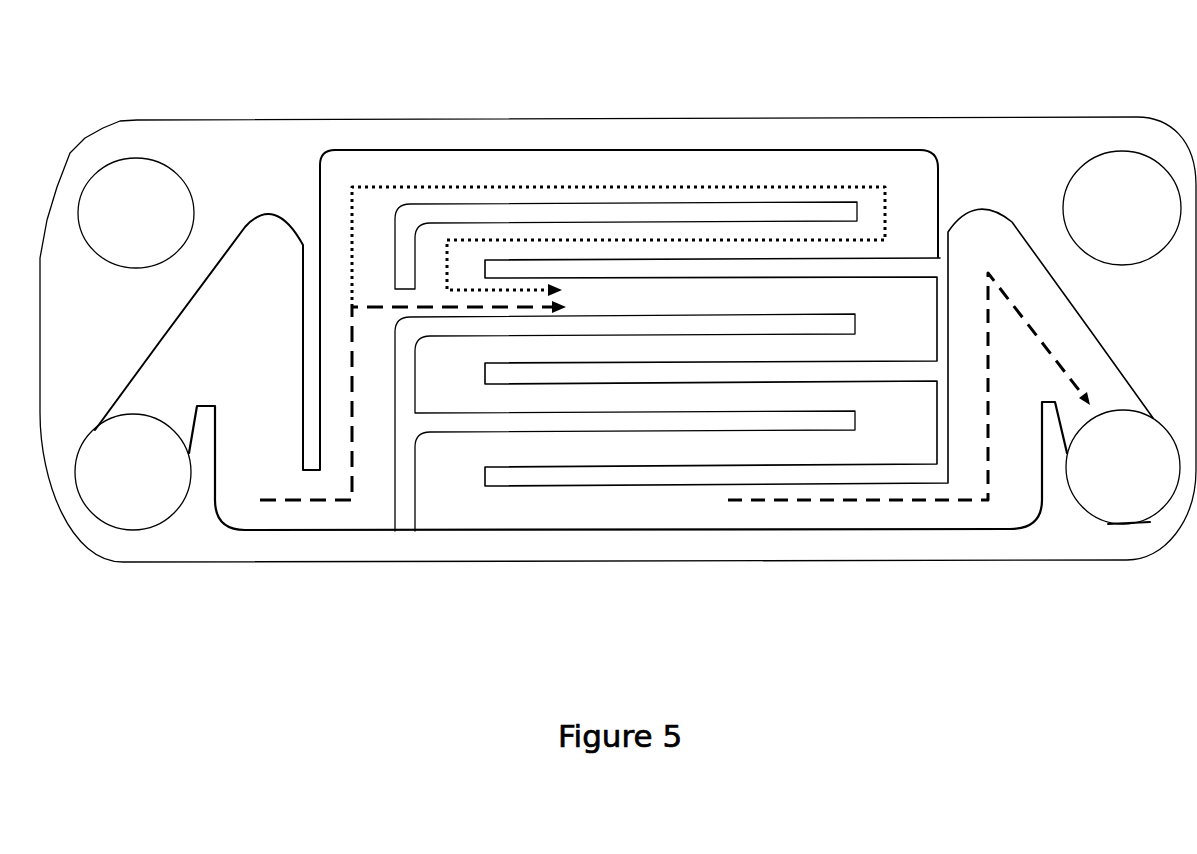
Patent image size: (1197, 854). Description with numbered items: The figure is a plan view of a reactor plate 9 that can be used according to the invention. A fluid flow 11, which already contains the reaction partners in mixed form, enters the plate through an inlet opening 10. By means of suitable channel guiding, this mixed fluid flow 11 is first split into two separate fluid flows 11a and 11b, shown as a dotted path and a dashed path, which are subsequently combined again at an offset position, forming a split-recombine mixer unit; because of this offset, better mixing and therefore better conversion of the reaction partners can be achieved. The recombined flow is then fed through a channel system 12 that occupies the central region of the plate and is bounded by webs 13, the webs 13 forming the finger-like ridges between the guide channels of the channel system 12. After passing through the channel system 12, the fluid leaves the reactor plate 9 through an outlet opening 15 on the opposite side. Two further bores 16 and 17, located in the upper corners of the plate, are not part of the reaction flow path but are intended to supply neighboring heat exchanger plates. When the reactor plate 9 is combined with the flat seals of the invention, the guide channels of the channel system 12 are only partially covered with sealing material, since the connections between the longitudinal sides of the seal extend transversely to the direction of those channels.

The reactor plate 9 is at (1028, 140).
The inlet opening 10 is at (135, 503).
The fluid flow 11 is at (350, 495).
The separate fluid flow 11a is at (438, 187).
The separate fluid flow 11b is at (373, 303).
The channel system 12 is at (688, 297).
The webs 13 is at (602, 320).
The outlet opening 15 is at (1130, 500).
The bore 16 is at (134, 188).
The bore 17 is at (1135, 177).